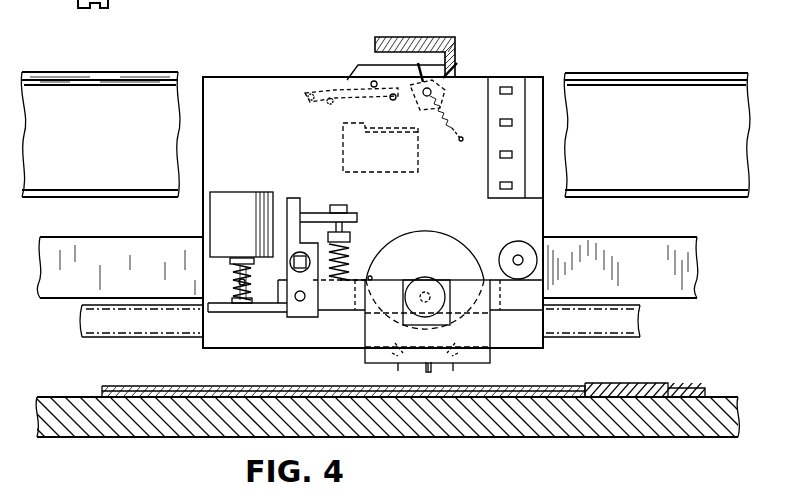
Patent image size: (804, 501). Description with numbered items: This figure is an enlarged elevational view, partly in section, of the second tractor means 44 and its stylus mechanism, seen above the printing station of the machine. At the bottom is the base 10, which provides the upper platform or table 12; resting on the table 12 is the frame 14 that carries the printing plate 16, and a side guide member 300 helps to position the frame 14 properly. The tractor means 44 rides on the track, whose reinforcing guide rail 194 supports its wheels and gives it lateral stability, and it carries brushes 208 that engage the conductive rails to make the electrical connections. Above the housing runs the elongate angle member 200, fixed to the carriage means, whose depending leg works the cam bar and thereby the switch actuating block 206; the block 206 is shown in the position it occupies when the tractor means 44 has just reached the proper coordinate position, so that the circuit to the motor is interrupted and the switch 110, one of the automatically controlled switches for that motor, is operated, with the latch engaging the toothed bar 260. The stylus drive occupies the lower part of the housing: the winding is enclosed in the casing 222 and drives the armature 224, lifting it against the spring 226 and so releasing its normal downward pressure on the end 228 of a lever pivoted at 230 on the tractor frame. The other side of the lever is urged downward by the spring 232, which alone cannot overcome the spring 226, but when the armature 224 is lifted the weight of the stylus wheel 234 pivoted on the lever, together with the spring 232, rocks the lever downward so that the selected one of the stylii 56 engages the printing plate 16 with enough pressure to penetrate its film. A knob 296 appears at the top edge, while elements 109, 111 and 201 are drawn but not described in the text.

The base 10 is at (510, 425).
The upper platform or table 12 is at (63, 397).
The frame 14 is at (640, 366).
The printing plate 16 is at (150, 385).
The second tractor means 44 is at (554, 225).
The stylii 56 is at (432, 369).
The switch 109 is at (393, 100).
The switch 110 is at (338, 84).
The pivot 111 is at (374, 81).
The guide rail 194 is at (665, 278).
The elongate angle member 200 is at (450, 38).
The platen 201 is at (142, 175).
The switch actuating block 206 is at (432, 92).
The brushes 208 is at (512, 185).
The casing 222 is at (237, 215).
The armature 224 is at (242, 303).
The spring 226 is at (236, 276).
The end of lever 228 is at (258, 312).
The lever pivot 230 is at (300, 301).
The spring 232 is at (352, 262).
The stylus wheel 234 is at (445, 250).
The toothed bar 260 is at (628, 321).
The knob 296 is at (108, 7).
The side guide member 300 is at (690, 388).